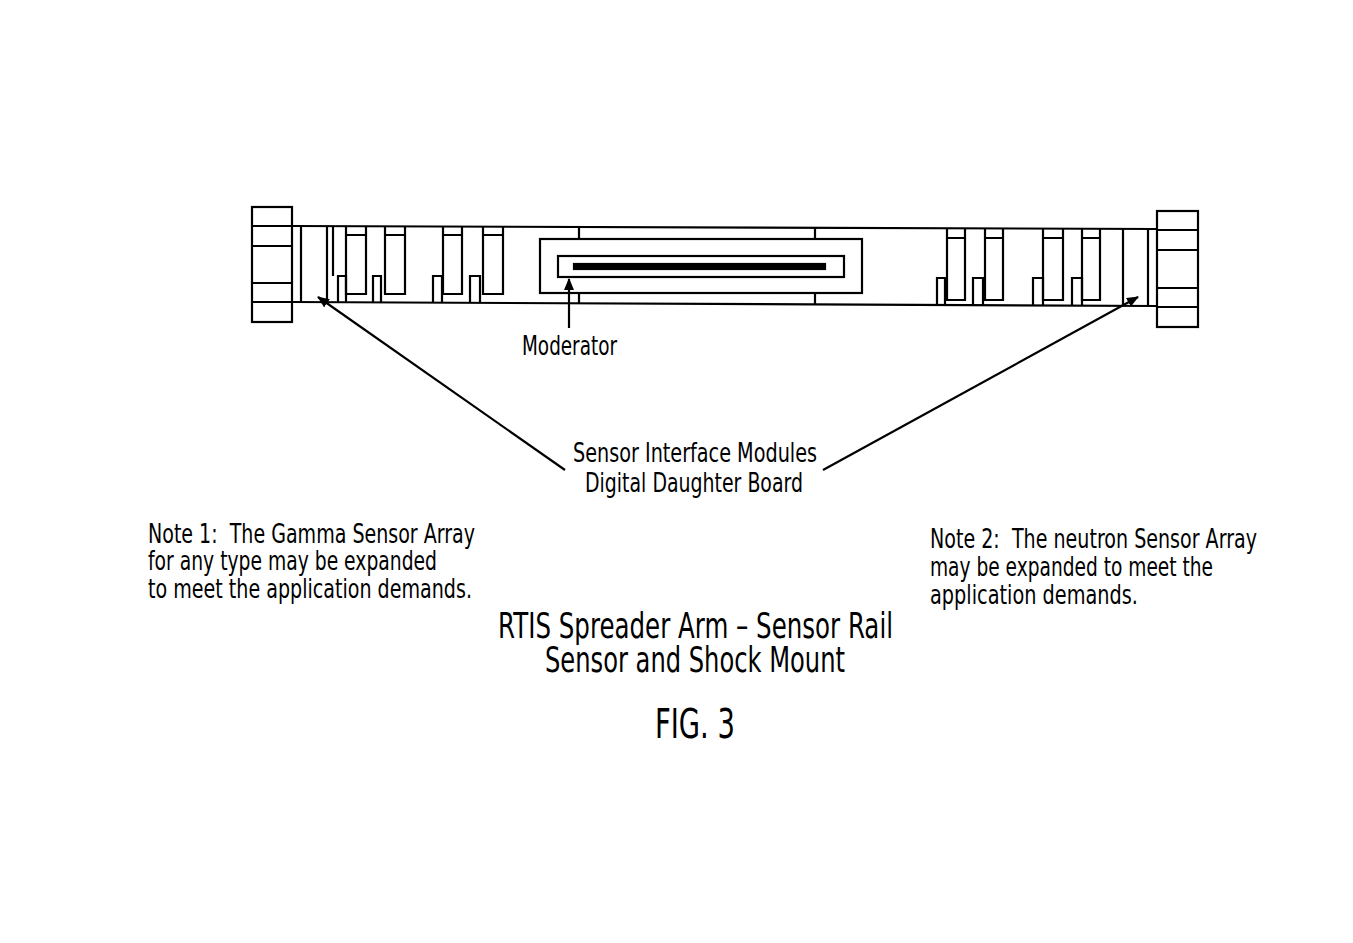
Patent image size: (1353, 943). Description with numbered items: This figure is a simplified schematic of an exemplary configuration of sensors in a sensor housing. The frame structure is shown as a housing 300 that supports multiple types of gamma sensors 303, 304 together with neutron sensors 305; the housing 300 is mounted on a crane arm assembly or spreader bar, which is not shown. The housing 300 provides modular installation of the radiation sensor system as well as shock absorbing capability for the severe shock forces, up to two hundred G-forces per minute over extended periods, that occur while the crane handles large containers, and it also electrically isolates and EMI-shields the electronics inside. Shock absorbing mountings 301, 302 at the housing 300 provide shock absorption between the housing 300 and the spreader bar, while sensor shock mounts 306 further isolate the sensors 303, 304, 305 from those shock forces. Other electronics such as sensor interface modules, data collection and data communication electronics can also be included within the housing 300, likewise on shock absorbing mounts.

The housing 300 is at (865, 227).
The shock absorbing mounting 301 is at (270, 215).
The shock absorbing mounting 302 is at (268, 293).
The gamma sensor 303 is at (355, 258).
The gamma sensor 304 is at (567, 208).
The neutron sensor 305 is at (655, 271).
The sensor shock mount 306 is at (336, 268).